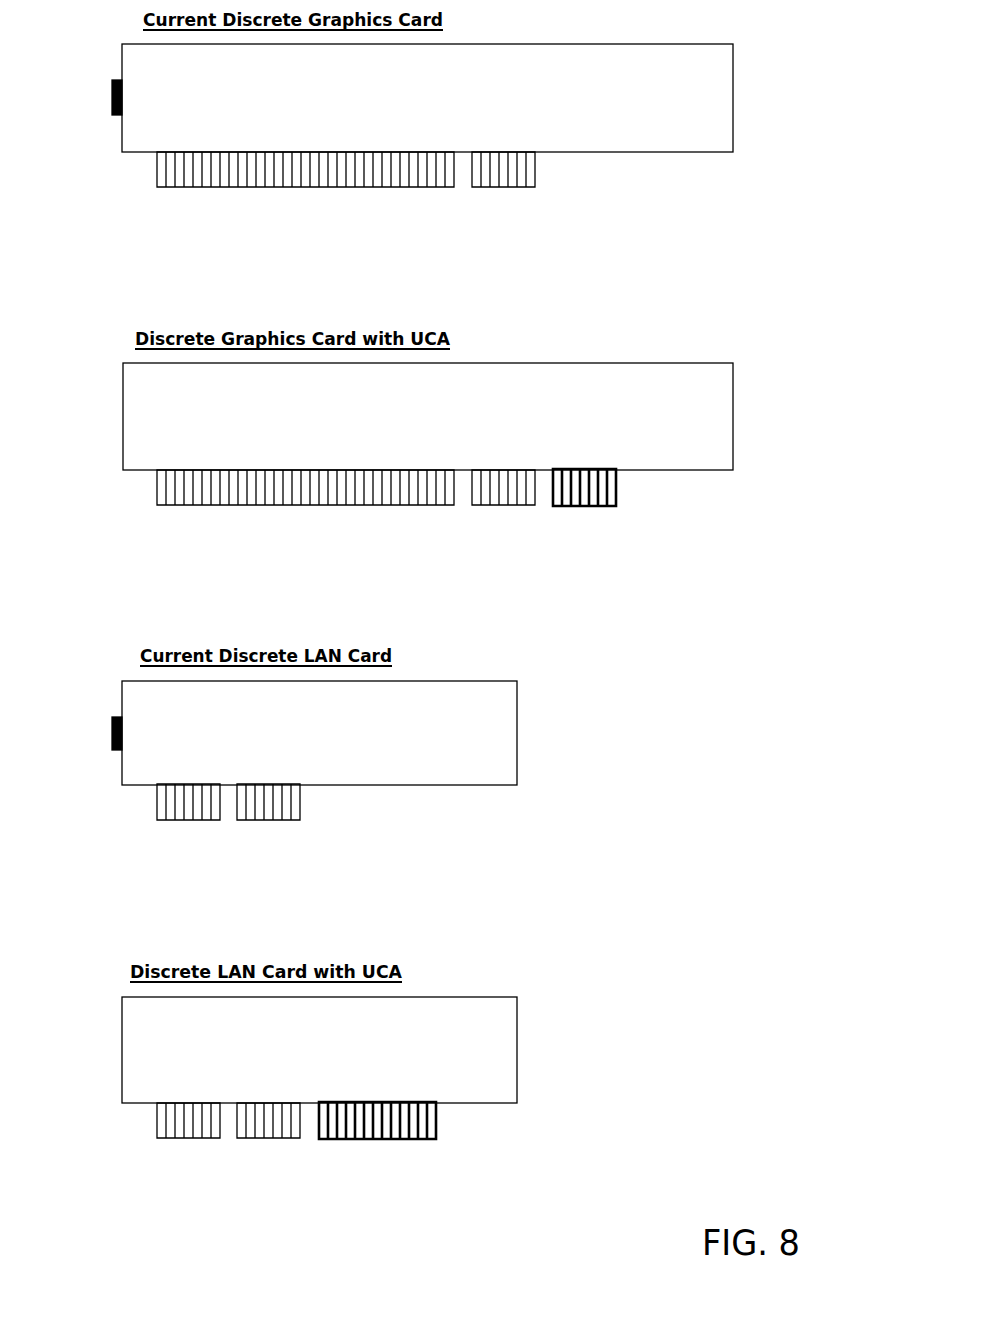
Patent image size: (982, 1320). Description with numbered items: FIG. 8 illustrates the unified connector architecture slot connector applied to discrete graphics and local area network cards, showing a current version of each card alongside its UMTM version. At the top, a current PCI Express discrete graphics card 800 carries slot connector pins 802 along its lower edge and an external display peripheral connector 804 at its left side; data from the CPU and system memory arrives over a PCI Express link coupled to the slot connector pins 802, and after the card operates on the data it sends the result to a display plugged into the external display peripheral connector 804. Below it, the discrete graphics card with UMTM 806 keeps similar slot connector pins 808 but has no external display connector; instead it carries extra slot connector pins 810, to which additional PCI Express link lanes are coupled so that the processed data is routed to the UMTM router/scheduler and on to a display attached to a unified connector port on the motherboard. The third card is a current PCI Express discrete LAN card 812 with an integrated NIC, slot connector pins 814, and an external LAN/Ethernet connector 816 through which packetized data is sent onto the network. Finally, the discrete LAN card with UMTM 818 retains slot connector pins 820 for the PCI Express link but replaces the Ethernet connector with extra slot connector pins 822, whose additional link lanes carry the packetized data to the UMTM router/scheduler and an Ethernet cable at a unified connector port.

The PCI Express discrete graphics card 800 is at (733, 99).
The slot connector pins 802 is at (535, 206).
The external display peripheral connector 804 is at (112, 94).
The discrete graphics card with UMTM 806 is at (733, 418).
The slot connector pins 808 is at (536, 525).
The extra slot connector pins 810 is at (553, 525).
The PCI Express discrete LAN card 812 is at (517, 735).
The slot connector pins 814 is at (302, 841).
The external LAN/Ethernet connector 816 is at (112, 731).
The discrete LAN card with UMTM 818 is at (517, 1052).
The slot connector pins 820 is at (300, 1158).
The extra slot connector pins 822 is at (436, 1158).